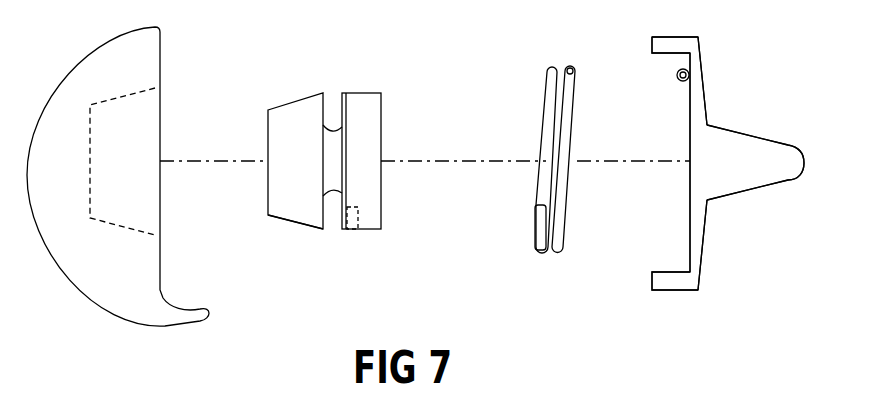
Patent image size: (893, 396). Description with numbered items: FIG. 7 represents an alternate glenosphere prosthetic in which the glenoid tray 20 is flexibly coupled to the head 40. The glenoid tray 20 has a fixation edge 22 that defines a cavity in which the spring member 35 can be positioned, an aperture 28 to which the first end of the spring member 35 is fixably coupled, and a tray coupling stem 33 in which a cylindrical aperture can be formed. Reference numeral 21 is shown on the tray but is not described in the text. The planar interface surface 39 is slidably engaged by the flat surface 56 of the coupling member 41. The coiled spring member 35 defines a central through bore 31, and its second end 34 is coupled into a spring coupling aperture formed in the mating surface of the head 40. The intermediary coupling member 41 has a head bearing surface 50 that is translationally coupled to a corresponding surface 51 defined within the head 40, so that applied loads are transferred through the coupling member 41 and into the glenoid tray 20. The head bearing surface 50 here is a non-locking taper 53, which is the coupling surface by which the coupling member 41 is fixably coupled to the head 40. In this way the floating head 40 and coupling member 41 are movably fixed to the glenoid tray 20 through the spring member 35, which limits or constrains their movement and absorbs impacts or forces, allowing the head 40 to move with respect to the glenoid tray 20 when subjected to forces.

The glenoid tray 20 is at (699, 95).
The bracket 21 is at (702, 58).
The fixation edge 22 is at (670, 43).
The aperture 28 is at (676, 74).
The central through bore 31 is at (580, 135).
The tray coupling stem 33 is at (755, 180).
The second end 34 is at (567, 67).
The spring member 35 is at (540, 222).
The planar interface surface 39 is at (688, 243).
The head 40 is at (101, 291).
The coupling member 41 is at (372, 221).
The head bearing surface 50 is at (290, 124).
The corresponding surface 51 is at (134, 229).
The non-locking taper 53 is at (296, 218).
The flat surface 56 is at (381, 136).